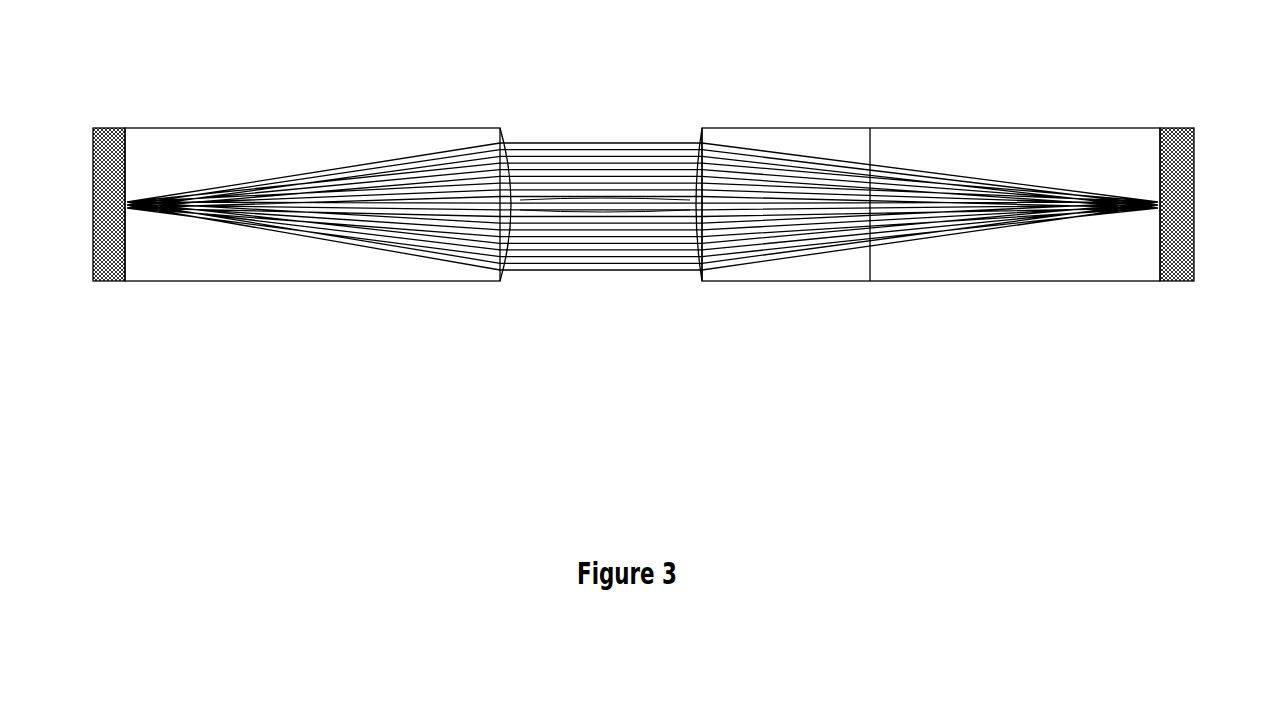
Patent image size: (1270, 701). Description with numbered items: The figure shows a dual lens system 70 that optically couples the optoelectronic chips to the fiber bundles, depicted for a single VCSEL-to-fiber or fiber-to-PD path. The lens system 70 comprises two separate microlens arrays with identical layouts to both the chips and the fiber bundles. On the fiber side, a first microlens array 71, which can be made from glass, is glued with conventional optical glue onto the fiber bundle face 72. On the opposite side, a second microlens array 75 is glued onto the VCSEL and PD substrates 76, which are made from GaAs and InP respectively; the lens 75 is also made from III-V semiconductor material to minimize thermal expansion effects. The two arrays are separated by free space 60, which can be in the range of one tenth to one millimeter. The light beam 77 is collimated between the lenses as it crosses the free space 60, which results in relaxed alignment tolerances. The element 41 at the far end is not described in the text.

The dual lens system 70 is at (636, 231).
The first microlens array 71 is at (260, 265).
The fiber bundle face 72 is at (103, 270).
The free space 60 is at (580, 137).
The light beam 77 is at (625, 258).
The second microlens array 75 is at (843, 145).
The VCSEL and PD substrates 76 is at (1065, 142).
The detector 41 is at (1180, 192).